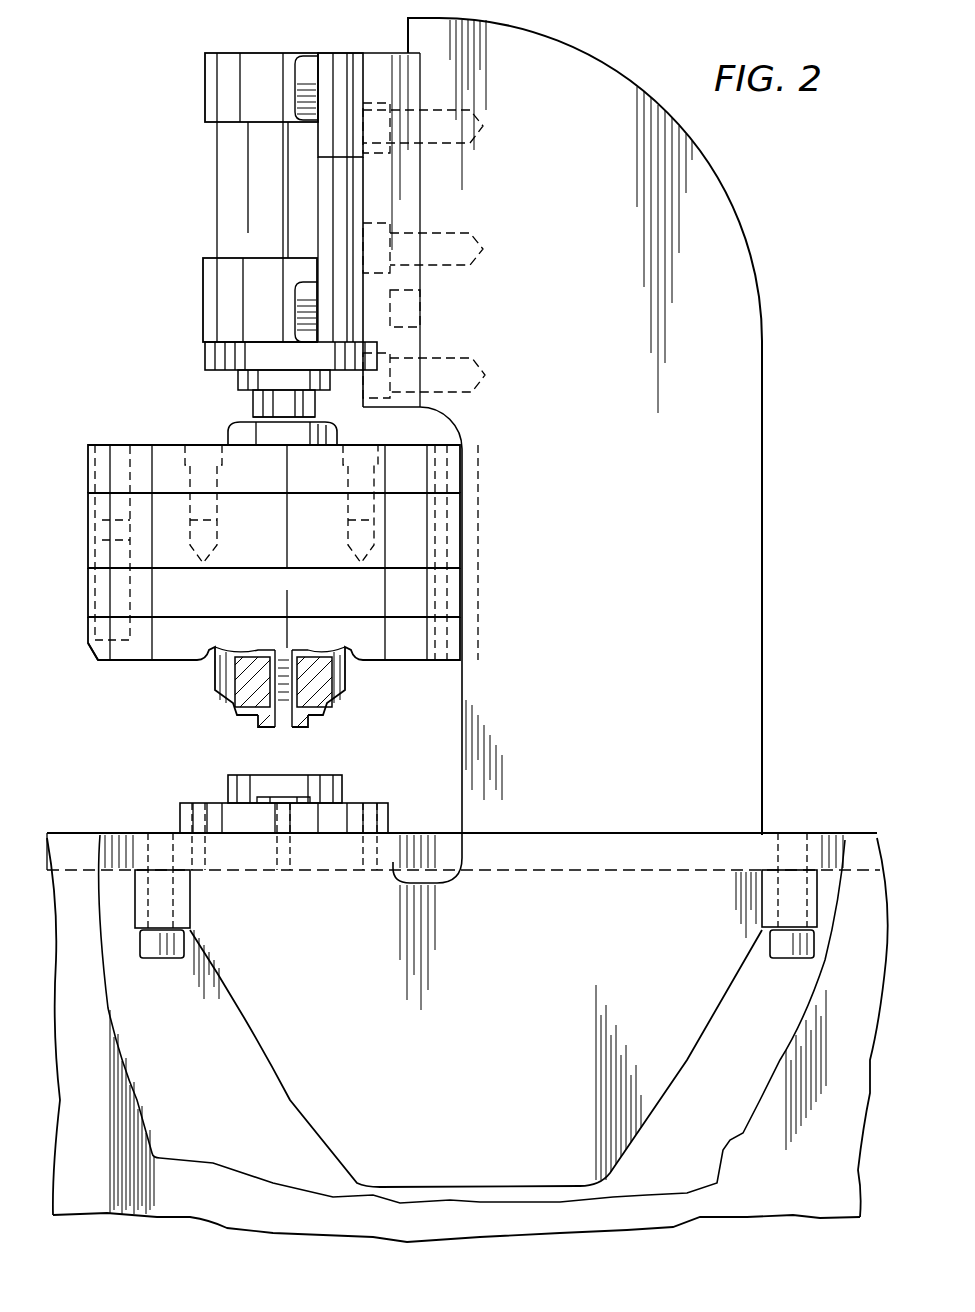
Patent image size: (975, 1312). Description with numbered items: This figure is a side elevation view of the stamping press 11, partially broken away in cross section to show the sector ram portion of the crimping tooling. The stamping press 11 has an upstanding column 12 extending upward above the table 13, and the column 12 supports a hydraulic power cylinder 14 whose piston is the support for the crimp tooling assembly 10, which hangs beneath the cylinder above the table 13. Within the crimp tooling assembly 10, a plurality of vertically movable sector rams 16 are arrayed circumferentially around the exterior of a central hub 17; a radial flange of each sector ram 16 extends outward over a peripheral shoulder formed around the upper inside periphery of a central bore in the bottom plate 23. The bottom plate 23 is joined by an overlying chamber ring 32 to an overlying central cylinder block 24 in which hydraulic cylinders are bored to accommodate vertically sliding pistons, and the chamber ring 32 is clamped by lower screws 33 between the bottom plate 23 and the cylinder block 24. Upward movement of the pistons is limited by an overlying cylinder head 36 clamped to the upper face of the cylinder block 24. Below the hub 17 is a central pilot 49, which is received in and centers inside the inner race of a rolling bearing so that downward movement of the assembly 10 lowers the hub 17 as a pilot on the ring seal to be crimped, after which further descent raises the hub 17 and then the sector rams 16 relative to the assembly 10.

The crimp tooling assembly 10 is at (259, 527).
The stamping press 11 is at (790, 805).
The upstanding column 12 is at (740, 616).
The table 13 is at (117, 833).
The hydraulic power cylinder 14 is at (233, 191).
The sector rams 16 is at (215, 676).
The central hub 17 is at (250, 718).
The bottom plate 23 is at (88, 637).
The central cylinder block 24 is at (88, 524).
The chamber ring 32 is at (88, 592).
The lower screws 33 is at (96, 664).
The cylinder head 36 is at (88, 474).
The central pilot 49 is at (310, 718).